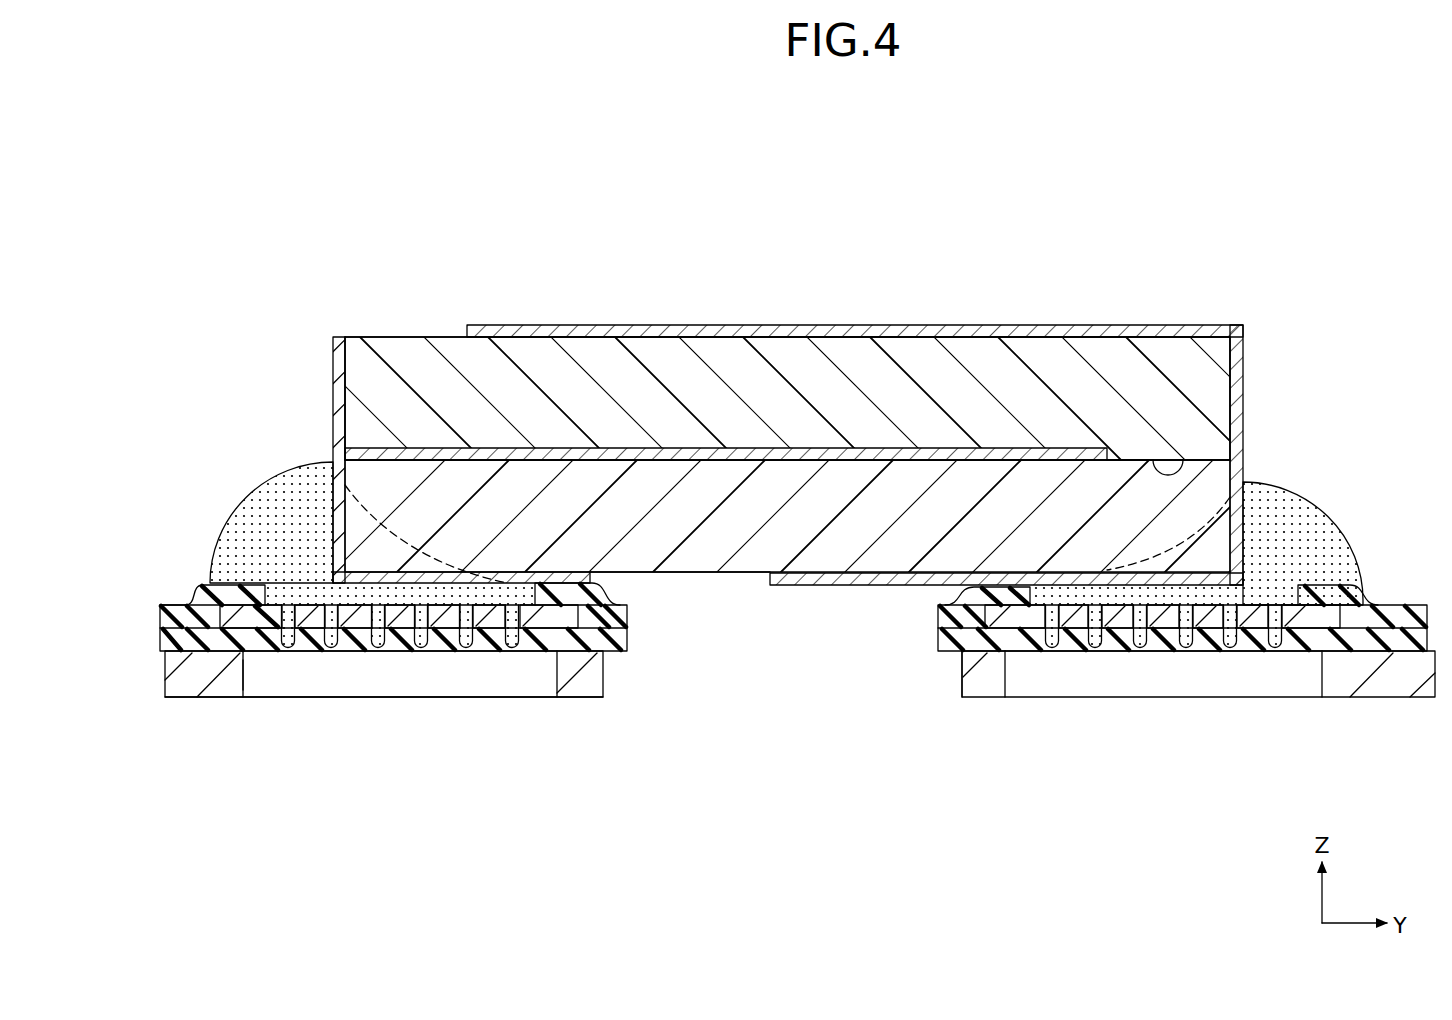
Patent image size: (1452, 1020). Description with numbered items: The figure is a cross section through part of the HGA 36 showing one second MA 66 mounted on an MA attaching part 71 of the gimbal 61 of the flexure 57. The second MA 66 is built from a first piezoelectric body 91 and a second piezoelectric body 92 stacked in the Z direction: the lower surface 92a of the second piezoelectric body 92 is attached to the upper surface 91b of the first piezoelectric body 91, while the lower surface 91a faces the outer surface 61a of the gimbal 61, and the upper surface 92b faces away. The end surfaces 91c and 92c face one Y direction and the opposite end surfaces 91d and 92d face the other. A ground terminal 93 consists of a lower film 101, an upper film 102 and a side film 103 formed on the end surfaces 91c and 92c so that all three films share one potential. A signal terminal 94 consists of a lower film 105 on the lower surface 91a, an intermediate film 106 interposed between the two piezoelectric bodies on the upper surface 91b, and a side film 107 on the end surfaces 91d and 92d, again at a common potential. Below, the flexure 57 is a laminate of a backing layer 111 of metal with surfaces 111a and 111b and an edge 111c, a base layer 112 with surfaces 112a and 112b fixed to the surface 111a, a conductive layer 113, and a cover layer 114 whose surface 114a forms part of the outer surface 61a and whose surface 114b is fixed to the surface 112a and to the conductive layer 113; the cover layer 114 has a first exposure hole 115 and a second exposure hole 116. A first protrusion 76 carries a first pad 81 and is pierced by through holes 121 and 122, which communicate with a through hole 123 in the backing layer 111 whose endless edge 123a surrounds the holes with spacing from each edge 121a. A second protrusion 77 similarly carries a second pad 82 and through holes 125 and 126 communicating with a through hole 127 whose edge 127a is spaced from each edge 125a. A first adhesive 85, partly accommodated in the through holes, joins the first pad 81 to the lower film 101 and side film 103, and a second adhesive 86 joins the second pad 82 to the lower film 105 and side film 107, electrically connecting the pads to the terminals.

The HGA 36 is at (238, 163).
The second MA 66 is at (812, 315).
The side film 103 is at (1244, 383).
The lower film 101 is at (875, 587).
The signal terminal 94 is at (442, 427).
The side film 107 is at (333, 337).
The second piezoelectric body 92 is at (1038, 390).
The lower surface 92a is at (1185, 458).
The upper surface 92b is at (925, 330).
The end surface 92c is at (1243, 363).
The end surface 92d is at (332, 360).
The ground terminal 93 is at (726, 353).
The upper film 102 is at (726, 353).
The intermediate film 106 is at (548, 457).
The first piezoelectric body 91 is at (700, 490).
The lower surface 91a is at (752, 575).
The upper surface 91b is at (1125, 460).
The end surface 91c is at (1243, 463).
The end surface 91d is at (323, 460).
The second adhesive 86 is at (243, 530).
The second pad 82 is at (270, 597).
The first adhesive 85 is at (1330, 540).
The first pad 81 is at (1193, 534).
The conductive layer 113 is at (1260, 603).
The cover layer 114 is at (160, 622).
The second exposure hole 116 is at (278, 582).
The outer surface 61a is at (140, 565).
The surface 114a is at (177, 603).
The base layer 112 is at (633, 699).
The surface 112a is at (625, 618).
The through holes 126 is at (377, 657).
The lower film 105 is at (422, 657).
The through holes 125 is at (512, 657).
The edge 125a is at (517, 655).
The flexure 57 is at (354, 741).
The gimbal 61 is at (354, 741).
The MA attaching part 71 is at (354, 741).
The second protrusion 77 is at (354, 741).
The surface 114b is at (200, 655).
The surface 112b is at (577, 653).
The edge 127a is at (245, 678).
The through hole 127 is at (380, 700).
The first protrusion 76 is at (1186, 629).
The surface 111a is at (1405, 607).
The first exposure hole 115 is at (1293, 587).
The edge 121a is at (1052, 655).
The through holes 121 is at (1138, 655).
The through holes 122 is at (1185, 655).
The backing layer 111 is at (1177, 728).
The through hole 123 is at (1177, 728).
The surface 111b is at (978, 698).
The edge 111c is at (962, 690).
The edge 123a is at (1317, 683).